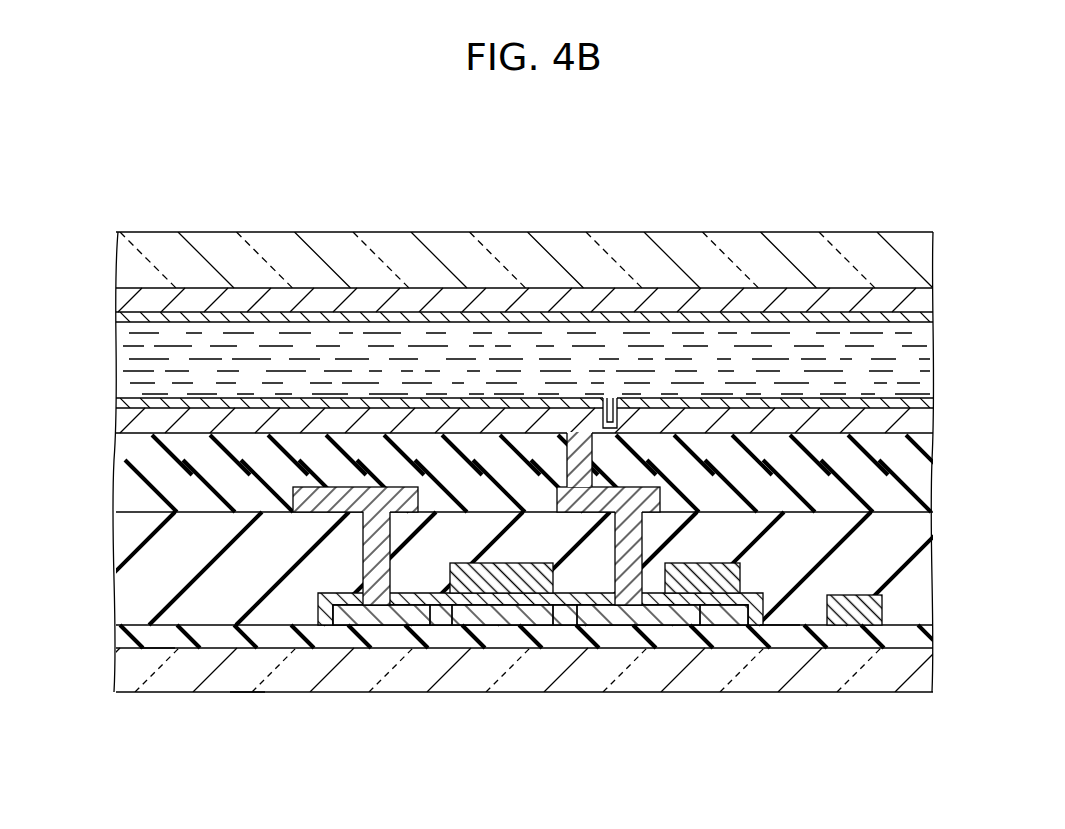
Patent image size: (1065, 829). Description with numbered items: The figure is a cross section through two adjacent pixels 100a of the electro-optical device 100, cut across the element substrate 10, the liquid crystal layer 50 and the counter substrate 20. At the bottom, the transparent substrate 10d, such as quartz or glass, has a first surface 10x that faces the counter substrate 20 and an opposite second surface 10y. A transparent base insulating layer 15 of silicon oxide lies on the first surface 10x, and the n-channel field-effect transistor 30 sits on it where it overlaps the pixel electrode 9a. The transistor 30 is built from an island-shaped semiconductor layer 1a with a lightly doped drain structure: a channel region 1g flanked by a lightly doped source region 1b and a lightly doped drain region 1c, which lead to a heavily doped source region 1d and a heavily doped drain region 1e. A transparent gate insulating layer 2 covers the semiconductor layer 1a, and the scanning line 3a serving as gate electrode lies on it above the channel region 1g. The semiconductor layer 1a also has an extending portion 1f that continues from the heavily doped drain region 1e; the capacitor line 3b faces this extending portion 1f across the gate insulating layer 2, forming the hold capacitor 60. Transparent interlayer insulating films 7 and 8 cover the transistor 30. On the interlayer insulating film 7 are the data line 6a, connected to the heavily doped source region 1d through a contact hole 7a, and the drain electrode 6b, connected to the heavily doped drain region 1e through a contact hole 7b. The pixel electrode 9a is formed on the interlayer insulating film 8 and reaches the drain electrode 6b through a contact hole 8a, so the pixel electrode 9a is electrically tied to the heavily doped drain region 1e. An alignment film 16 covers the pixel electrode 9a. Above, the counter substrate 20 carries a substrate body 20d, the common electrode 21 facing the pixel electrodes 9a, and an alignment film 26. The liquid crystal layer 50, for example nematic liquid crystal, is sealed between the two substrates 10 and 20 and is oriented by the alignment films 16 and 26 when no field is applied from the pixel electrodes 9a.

The electro-optical device 100 is at (552, 472).
The pixel 100a is at (265, 342).
The counter substrate 20 is at (549, 264).
The counter substrate body 20d is at (928, 255).
The common electrode 21 is at (928, 298).
The alignment film 26 is at (937, 320).
The liquid crystal layer 50 is at (925, 365).
The element substrate 10 is at (552, 490).
The transparent substrate 10d is at (925, 670).
The first surface 10x is at (157, 640).
The second surface 10y is at (240, 705).
The base insulating layer 15 is at (925, 630).
The alignment film 16 is at (933, 403).
The pixel electrode 9a is at (470, 420).
The interlayer insulating film 8 is at (925, 470).
The contact hole 8a is at (578, 462).
The interlayer insulating film 7 is at (925, 520).
The contact hole 7a is at (375, 545).
The contact hole 7b is at (630, 545).
The data line 6a is at (305, 496).
The drain electrode 6b is at (645, 500).
The field-effect transistor 30 is at (668, 630).
The scanning line 3a is at (512, 575).
The capacitor line 3b is at (735, 580).
The gate insulating layer 2 is at (713, 604).
The semiconductor layer 1a is at (554, 712).
The lightly doped source region 1b is at (440, 622).
The lightly doped drain region 1c is at (560, 620).
The heavily doped source region 1d is at (348, 622).
The heavily doped drain region 1e is at (660, 622).
The extending portion 1f is at (730, 620).
The channel region 1g is at (498, 620).
The hold capacitor 60 is at (790, 647).